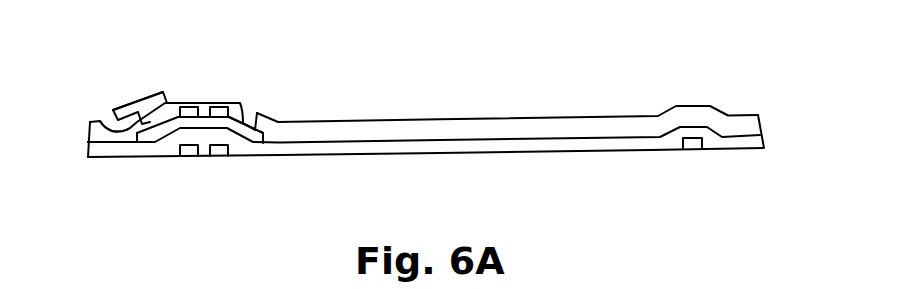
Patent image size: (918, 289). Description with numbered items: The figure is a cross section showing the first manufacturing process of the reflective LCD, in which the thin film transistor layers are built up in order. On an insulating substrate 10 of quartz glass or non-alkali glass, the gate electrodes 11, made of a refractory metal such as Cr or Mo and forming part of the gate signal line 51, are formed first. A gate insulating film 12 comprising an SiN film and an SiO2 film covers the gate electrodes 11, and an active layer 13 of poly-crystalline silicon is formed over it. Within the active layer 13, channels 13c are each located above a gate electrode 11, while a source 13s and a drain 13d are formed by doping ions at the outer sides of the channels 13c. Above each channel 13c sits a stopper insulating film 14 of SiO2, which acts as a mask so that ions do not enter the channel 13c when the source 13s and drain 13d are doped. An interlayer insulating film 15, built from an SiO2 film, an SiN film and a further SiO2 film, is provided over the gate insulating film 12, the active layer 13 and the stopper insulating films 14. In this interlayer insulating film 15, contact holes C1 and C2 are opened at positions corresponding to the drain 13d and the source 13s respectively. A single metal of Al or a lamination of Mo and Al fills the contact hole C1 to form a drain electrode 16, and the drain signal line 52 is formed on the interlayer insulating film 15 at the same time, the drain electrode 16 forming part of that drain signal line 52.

The insulating substrate 10 is at (764, 150).
The gate electrode 11 is at (186, 150).
The gate insulating film 12 is at (88, 156).
The active layer 13 is at (283, 141).
The channel 13c is at (176, 137).
The drain 13d is at (145, 146).
The source 13s is at (266, 152).
The stopper insulating film 14 is at (168, 102).
The interlayer insulating film 15 is at (91, 135).
The drain electrode 16 is at (127, 106).
The drain signal line 52 is at (138, 101).
The gate signal line 51 is at (693, 143).
The contact hole C1 is at (101, 120).
The contact hole C2 is at (252, 115).